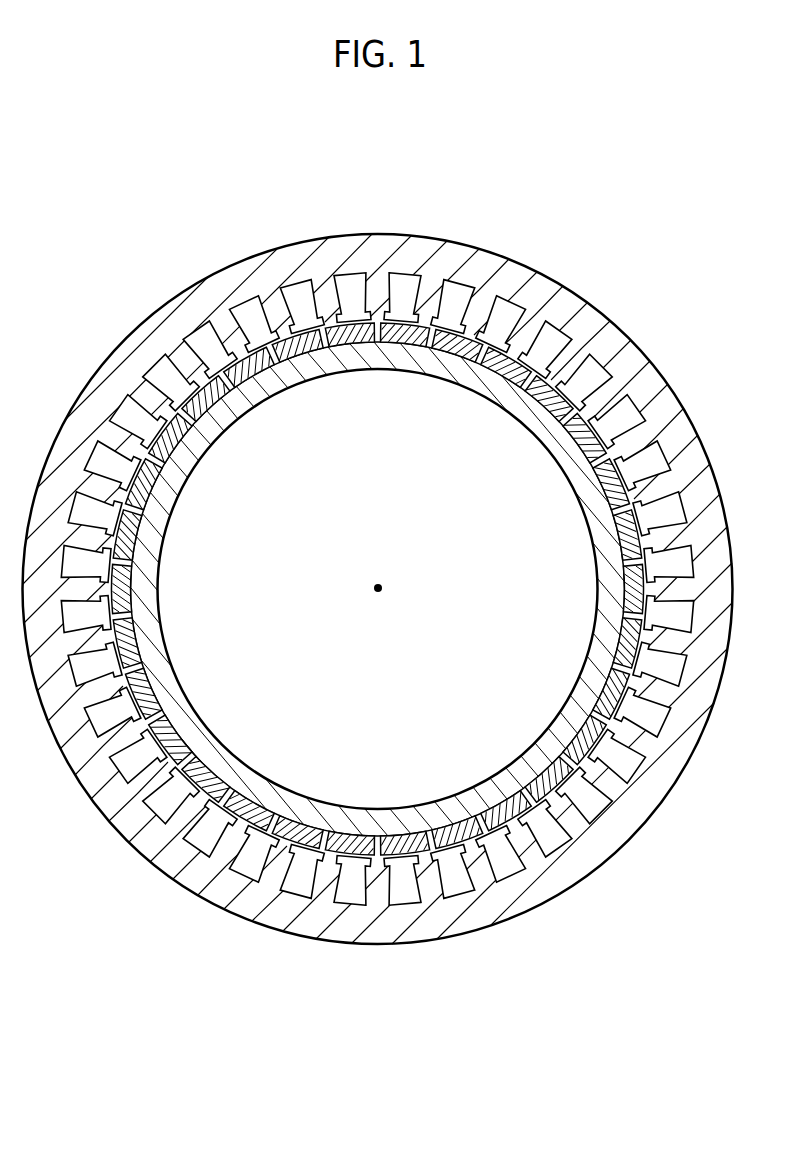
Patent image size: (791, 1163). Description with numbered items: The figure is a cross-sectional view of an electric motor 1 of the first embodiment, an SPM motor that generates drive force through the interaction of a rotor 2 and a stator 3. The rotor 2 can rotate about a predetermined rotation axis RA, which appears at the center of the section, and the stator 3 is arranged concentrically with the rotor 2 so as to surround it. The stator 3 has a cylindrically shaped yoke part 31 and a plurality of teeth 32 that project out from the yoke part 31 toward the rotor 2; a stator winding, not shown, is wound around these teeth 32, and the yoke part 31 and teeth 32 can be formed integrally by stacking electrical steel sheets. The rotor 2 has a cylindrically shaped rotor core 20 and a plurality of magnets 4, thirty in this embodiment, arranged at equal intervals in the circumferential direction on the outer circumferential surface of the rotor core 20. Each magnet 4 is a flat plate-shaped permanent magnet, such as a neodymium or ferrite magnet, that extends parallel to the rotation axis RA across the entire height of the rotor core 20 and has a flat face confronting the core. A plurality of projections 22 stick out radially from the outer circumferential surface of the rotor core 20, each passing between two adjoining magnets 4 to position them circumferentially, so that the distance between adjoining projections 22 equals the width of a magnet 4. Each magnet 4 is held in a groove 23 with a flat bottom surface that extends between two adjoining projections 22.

The electric motor 1 is at (60, 182).
The rotor 2 is at (377, 589).
The stator 3 is at (378, 550).
The magnet 4 is at (190, 472).
The rotor core 20 is at (378, 589).
The projection 22 is at (375, 313).
The groove 23 is at (354, 343).
The yoke part 31 is at (531, 287).
The teeth 32 is at (436, 292).
The rotation axis RA is at (381, 586).